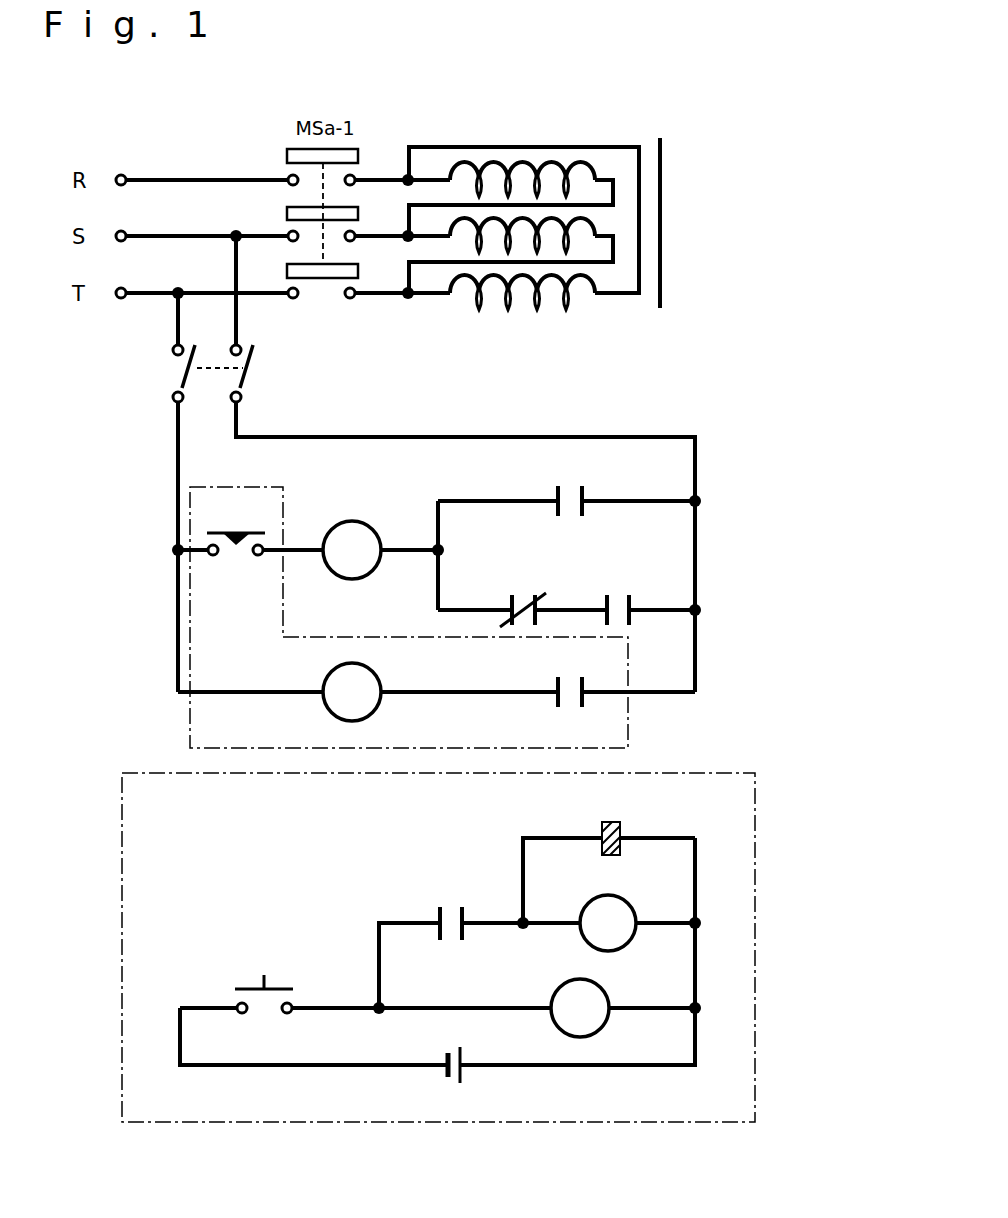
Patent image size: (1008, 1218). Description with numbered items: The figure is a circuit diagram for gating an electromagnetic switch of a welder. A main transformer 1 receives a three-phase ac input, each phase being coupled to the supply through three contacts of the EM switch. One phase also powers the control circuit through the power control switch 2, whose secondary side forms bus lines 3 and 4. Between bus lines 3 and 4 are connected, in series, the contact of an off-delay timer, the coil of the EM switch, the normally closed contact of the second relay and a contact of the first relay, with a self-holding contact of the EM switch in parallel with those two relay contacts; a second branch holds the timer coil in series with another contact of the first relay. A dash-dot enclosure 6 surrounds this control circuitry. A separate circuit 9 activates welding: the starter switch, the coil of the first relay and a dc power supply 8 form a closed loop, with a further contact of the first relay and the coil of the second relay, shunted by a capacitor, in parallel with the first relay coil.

The main transformer 1 is at (665, 217).
The power control switch 2 is at (183, 373).
The bus line 3 is at (178, 473).
The bus line 4 is at (700, 462).
The motor control circuit 6 is at (630, 660).
The dc power supply 8 is at (453, 1083).
The circuit 9 is at (475, 975).